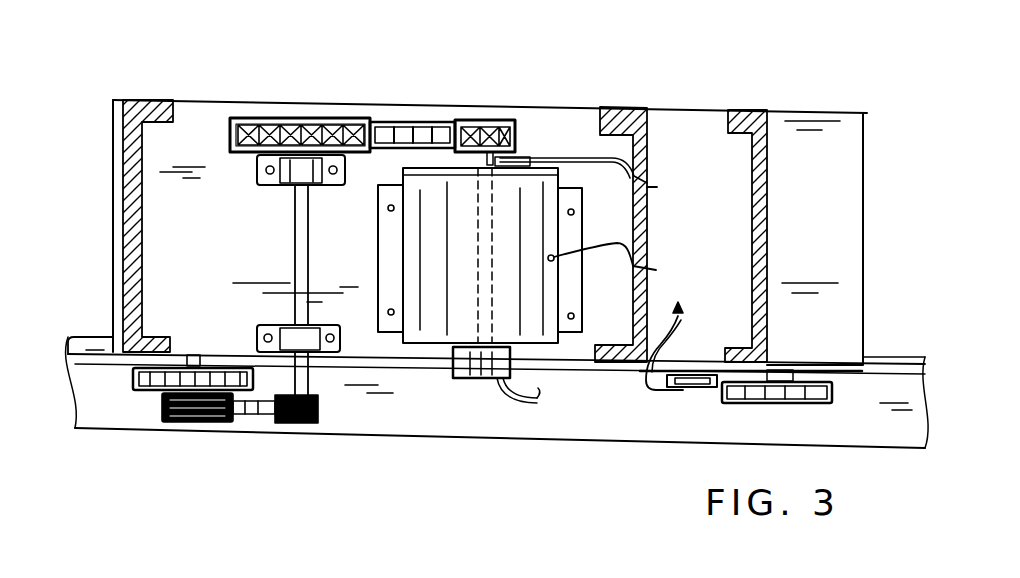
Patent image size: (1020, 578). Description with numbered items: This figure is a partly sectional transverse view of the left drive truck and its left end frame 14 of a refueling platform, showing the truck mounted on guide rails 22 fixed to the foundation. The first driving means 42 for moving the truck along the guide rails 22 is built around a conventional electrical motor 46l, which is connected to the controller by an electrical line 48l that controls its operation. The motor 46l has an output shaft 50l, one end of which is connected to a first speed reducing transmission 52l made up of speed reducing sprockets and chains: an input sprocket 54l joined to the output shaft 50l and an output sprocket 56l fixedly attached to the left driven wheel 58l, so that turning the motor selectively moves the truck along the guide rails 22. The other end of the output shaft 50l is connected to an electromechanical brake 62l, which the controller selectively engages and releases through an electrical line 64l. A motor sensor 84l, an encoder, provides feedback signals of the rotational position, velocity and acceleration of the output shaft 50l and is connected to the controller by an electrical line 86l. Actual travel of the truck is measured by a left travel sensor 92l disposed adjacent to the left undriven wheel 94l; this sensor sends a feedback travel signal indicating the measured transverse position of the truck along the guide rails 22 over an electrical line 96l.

The left end frame 14 is at (770, 149).
The guide rails 22 is at (83, 337).
The first driving means 42 is at (432, 118).
The electrical motor 46l is at (412, 258).
The electrical line 48l is at (625, 262).
The motor output shaft 50l is at (481, 228).
The first speed reducing transmission 52l is at (277, 118).
The input sprocket 54l is at (479, 122).
The output sprocket 56l is at (197, 423).
The left driven wheel 58l is at (143, 388).
The electromechanical brake 62l is at (463, 379).
The electrical line 64l is at (538, 406).
The motor sensor 84l is at (523, 163).
The electrical line 86l is at (675, 188).
The left travel sensor 92l is at (688, 388).
The left undriven wheel 94l is at (805, 403).
The electrical line 96l is at (677, 318).